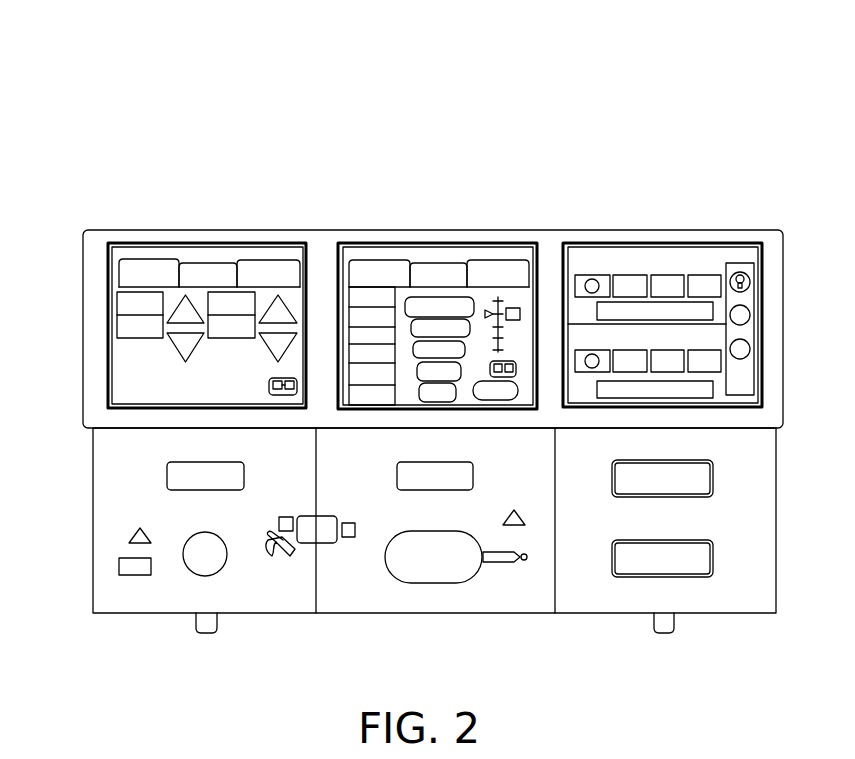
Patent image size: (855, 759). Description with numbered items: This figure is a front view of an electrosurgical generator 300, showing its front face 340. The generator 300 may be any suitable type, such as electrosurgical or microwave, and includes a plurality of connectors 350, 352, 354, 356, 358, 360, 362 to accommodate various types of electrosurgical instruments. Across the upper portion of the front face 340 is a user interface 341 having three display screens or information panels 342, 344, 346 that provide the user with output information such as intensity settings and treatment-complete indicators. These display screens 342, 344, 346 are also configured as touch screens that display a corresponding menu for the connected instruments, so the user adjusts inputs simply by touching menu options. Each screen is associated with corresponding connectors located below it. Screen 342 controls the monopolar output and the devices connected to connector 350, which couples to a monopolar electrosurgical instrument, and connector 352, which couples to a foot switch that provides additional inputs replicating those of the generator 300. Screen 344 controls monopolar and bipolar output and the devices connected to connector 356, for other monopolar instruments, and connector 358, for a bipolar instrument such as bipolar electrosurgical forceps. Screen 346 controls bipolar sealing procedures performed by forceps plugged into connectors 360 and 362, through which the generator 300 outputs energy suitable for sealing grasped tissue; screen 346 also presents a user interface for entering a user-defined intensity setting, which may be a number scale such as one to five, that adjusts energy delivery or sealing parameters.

The generator 300 is at (142, 113).
The front face 340 is at (335, 230).
The user interface 341 is at (518, 217).
The display screen 342 is at (218, 247).
The display screen 344 is at (445, 245).
The display screen 346 is at (675, 245).
The connector 350 is at (167, 468).
The connector 352 is at (224, 566).
The connector 354 is at (309, 516).
The connector 356 is at (397, 475).
The connector 358 is at (480, 575).
The connector 360 is at (713, 479).
The connector 362 is at (713, 559).